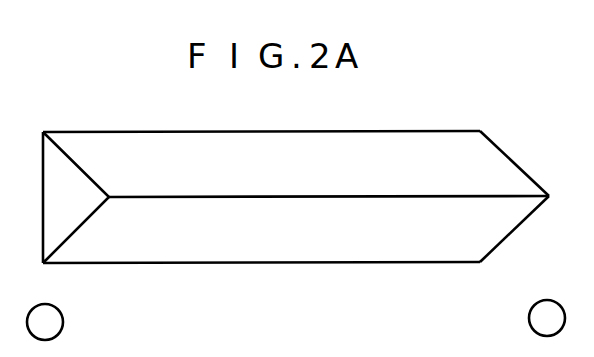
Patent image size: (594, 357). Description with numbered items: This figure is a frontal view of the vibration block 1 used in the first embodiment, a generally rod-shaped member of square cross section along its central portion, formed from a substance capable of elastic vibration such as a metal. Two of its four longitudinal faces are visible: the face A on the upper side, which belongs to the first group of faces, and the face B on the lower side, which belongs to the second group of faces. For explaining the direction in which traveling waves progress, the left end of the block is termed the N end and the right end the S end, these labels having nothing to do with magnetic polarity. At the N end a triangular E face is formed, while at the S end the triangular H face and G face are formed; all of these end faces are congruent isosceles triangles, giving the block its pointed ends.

The vibration block 1 is at (422, 147).
The face A is at (261, 156).
The face B is at (261, 242).
The E face E is at (76, 197).
The H face H is at (520, 163).
The G face G is at (519, 229).
The N end N is at (45, 322).
The S end S is at (547, 318).